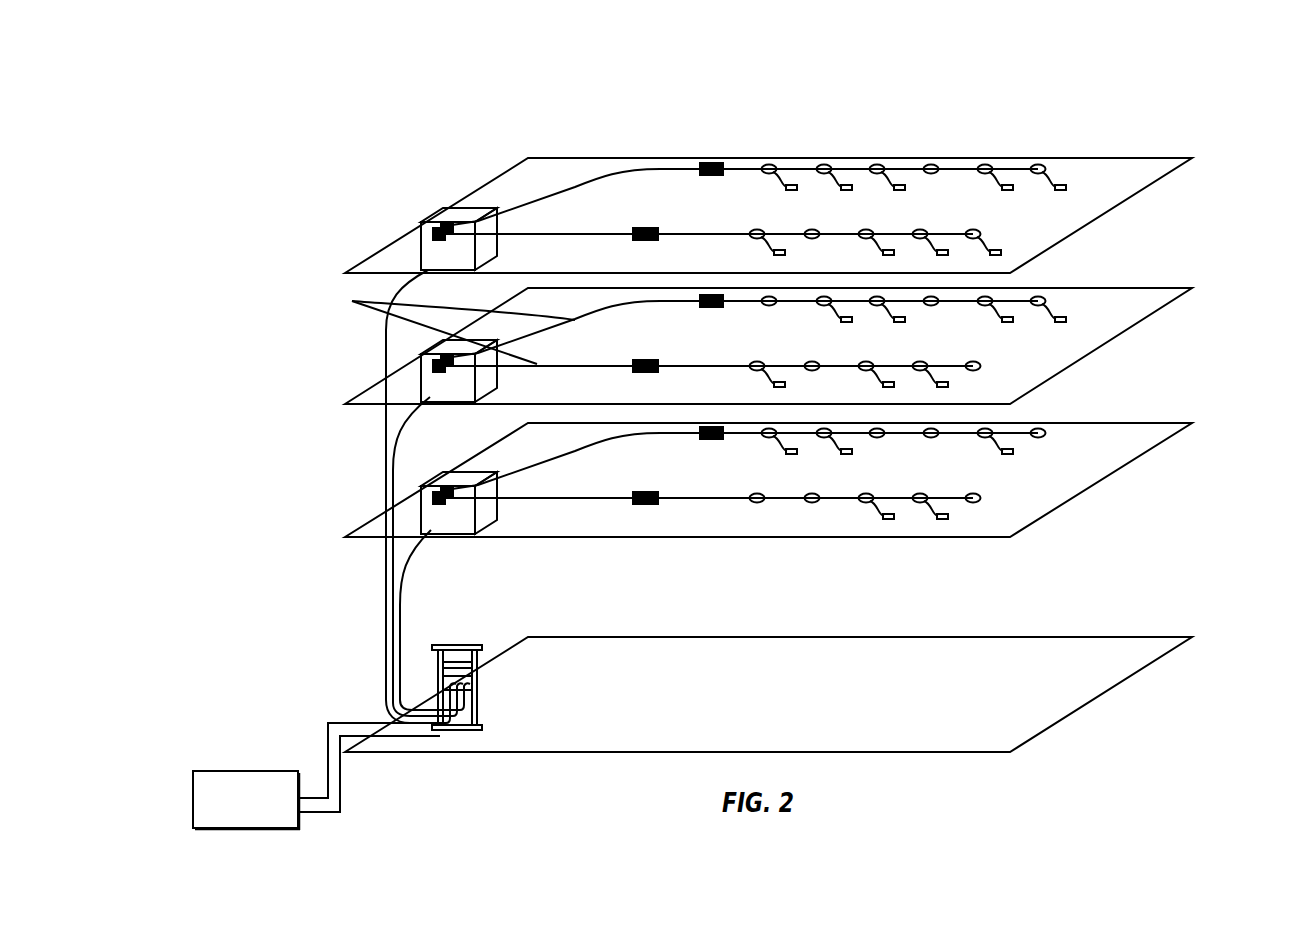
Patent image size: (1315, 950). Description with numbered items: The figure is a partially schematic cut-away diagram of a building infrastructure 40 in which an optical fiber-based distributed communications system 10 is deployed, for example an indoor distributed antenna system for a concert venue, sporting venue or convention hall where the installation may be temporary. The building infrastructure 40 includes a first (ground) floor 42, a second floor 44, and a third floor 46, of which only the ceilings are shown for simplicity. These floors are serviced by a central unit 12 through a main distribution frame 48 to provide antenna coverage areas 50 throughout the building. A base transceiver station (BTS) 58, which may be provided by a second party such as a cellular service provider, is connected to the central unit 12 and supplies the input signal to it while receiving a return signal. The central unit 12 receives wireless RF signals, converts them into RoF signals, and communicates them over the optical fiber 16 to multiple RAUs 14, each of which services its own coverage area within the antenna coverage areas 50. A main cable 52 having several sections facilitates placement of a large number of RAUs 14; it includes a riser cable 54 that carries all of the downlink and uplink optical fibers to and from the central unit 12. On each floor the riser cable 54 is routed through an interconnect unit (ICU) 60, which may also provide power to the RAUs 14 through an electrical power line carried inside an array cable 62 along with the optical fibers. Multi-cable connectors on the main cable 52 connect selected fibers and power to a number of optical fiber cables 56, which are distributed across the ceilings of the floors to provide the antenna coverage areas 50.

The optical fiber-based distributed communications system 10 is at (893, 90).
The central unit 12 is at (482, 693).
The RAUs 14 is at (1006, 185).
The optical fiber 16 is at (583, 185).
The building infrastructure 40 is at (312, 420).
The first (ground) floor 42 is at (1137, 392).
The second floor 44 is at (1145, 242).
The third floor 46 is at (1177, 130).
The main distribution frame 48 is at (458, 726).
The antenna coverage areas 50 is at (985, 283).
The main cable 52 is at (338, 537).
The riser cable 54 is at (385, 605).
The optical fiber cables 56 is at (449, 325).
The base transceiver station (BTS) 58 is at (240, 830).
The interconnect unit (ICU) 60 is at (430, 222).
The array cable 62 is at (645, 170).